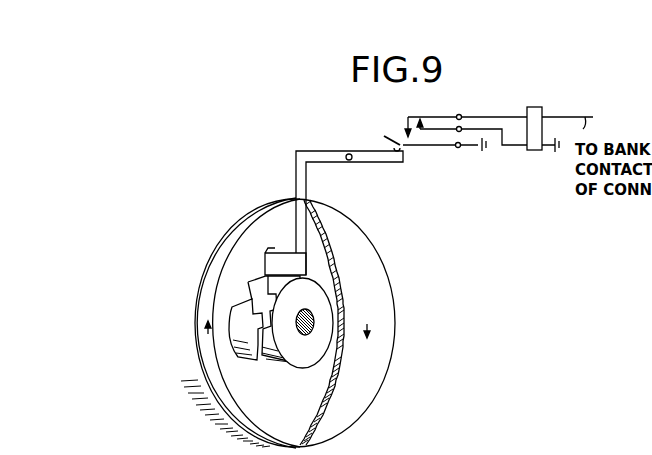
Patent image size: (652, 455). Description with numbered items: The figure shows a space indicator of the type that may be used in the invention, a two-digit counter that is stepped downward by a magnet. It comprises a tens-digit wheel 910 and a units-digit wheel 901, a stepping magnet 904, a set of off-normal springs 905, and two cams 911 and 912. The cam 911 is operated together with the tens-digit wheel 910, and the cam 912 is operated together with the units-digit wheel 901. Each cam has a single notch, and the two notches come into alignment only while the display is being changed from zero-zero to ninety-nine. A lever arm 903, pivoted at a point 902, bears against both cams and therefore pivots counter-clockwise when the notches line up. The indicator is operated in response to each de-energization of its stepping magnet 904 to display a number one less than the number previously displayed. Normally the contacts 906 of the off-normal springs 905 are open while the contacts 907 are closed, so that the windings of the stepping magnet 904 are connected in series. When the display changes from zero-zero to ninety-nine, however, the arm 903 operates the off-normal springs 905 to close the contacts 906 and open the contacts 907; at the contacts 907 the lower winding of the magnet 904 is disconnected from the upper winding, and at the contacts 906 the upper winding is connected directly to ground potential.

The units-digit wheel 901 is at (295, 323).
The pivot point 902 is at (349, 153).
The lever arm 903 is at (378, 163).
The stepping magnet 904 is at (527, 108).
The off-normal springs 905 is at (422, 147).
The contacts 906 is at (400, 132).
The contacts 907 is at (427, 122).
The tens-digit wheel 910 is at (182, 280).
The cam 911 is at (250, 362).
The cam 912 is at (288, 370).